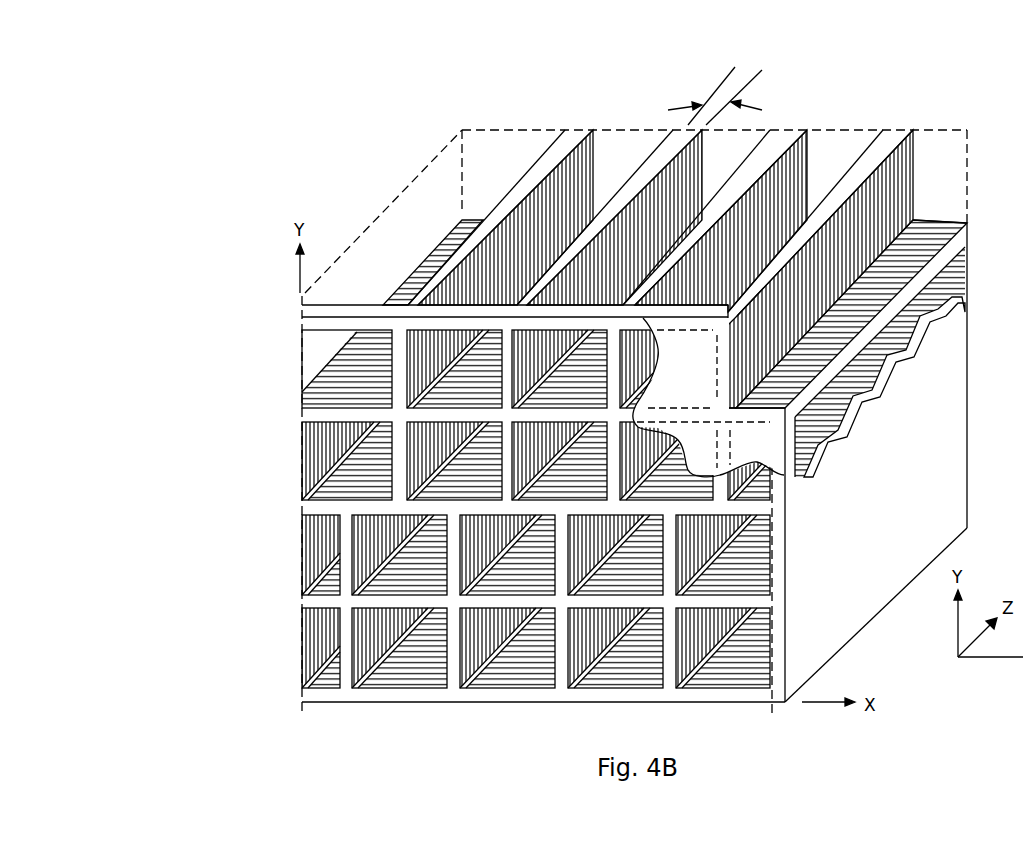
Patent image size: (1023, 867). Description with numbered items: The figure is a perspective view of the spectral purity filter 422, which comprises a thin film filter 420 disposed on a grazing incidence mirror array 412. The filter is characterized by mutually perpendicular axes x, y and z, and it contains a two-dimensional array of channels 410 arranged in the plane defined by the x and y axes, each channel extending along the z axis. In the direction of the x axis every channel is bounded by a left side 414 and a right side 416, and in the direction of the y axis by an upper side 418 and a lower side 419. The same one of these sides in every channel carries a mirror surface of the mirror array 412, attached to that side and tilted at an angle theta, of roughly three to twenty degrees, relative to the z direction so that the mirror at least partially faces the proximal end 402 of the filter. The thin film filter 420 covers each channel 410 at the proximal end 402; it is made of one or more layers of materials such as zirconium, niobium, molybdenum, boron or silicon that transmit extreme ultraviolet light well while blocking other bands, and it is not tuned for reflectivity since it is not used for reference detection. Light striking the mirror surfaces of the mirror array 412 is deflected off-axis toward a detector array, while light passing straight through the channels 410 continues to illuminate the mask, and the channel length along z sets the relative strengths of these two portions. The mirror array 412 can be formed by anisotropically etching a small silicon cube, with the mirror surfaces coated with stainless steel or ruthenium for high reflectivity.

The proximal end 402 is at (222, 696).
The channel 410 is at (438, 384).
The grazing incidence mirror array 412 is at (651, 164).
The left side 414 is at (447, 357).
The right side 416 is at (500, 360).
The upper side 418 is at (440, 342).
The lower side 419 is at (455, 392).
The thin film filter 420 is at (704, 396).
The spectral purity filter 422 is at (373, 60).